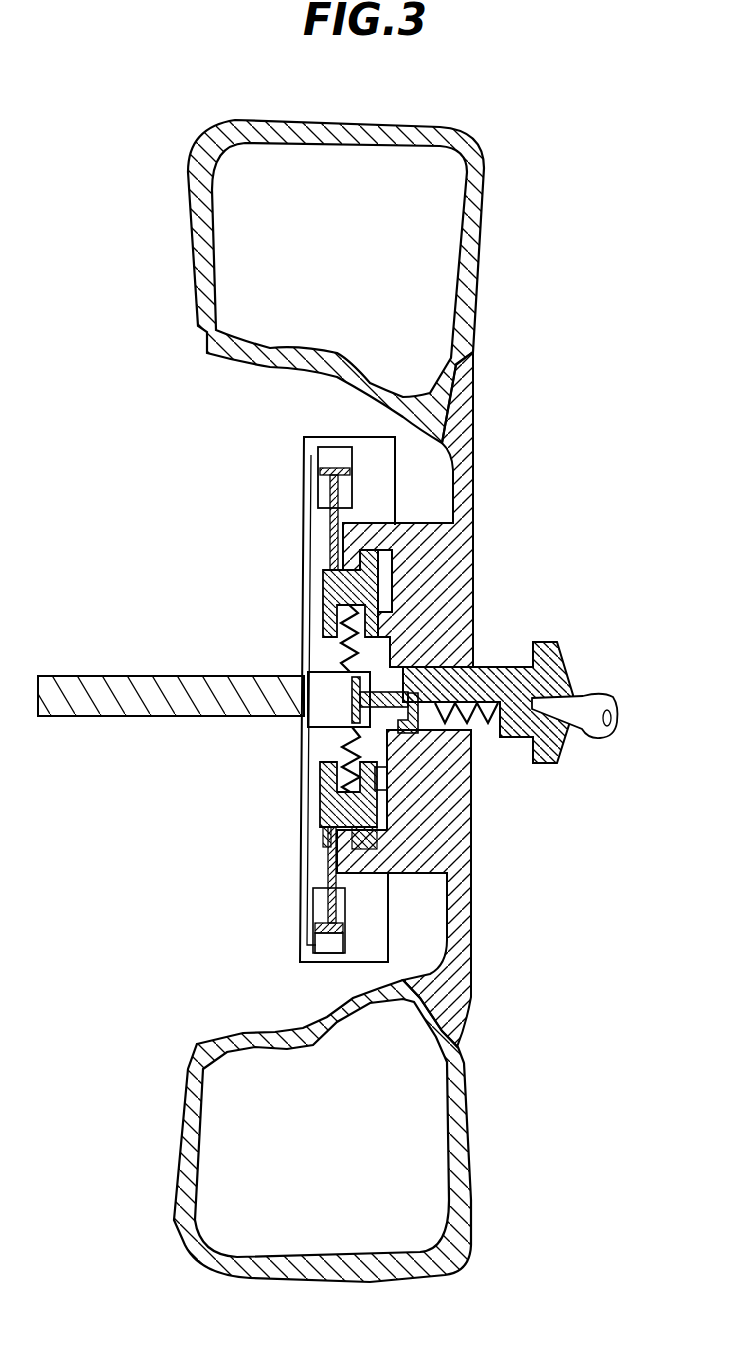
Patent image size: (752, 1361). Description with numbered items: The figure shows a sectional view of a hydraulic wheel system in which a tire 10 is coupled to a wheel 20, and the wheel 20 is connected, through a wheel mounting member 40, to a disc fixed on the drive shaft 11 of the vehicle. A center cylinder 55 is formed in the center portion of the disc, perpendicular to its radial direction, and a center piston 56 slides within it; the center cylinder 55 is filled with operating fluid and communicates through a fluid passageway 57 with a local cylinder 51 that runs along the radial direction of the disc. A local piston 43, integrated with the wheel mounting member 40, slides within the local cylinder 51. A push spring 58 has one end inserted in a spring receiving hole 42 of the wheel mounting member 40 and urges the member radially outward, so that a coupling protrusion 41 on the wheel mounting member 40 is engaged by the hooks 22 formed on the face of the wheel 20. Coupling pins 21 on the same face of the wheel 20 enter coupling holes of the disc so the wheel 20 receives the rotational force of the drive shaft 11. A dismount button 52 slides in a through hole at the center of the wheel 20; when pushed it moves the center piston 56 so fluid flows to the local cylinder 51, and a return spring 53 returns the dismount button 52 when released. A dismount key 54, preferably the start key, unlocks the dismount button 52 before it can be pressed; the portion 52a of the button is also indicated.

The tire 10 is at (490, 215).
The drive shaft 11 is at (133, 712).
The wheel 20 is at (482, 430).
The coupling pins 21 is at (395, 618).
The hooks 22 is at (330, 855).
The wheel mounting member 40 is at (316, 592).
The coupling protrusion 41 is at (395, 552).
The spring receiving hole 42 is at (316, 553).
The local piston 43 is at (318, 516).
The local cylinder 51 is at (325, 450).
The dismount button 52 is at (560, 660).
The valve stem shoulder 52a is at (500, 732).
The return spring 53 is at (481, 726).
The dismount key 54 is at (618, 711).
The center cylinder 55 is at (338, 711).
The center piston 56 is at (315, 755).
The fluid passageway 57 is at (312, 614).
The push spring 58 is at (340, 648).